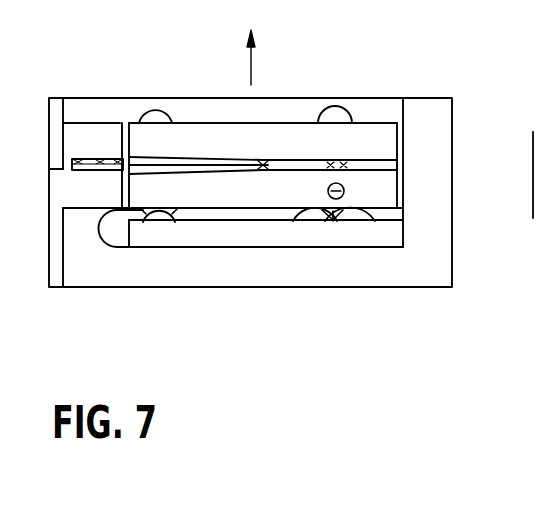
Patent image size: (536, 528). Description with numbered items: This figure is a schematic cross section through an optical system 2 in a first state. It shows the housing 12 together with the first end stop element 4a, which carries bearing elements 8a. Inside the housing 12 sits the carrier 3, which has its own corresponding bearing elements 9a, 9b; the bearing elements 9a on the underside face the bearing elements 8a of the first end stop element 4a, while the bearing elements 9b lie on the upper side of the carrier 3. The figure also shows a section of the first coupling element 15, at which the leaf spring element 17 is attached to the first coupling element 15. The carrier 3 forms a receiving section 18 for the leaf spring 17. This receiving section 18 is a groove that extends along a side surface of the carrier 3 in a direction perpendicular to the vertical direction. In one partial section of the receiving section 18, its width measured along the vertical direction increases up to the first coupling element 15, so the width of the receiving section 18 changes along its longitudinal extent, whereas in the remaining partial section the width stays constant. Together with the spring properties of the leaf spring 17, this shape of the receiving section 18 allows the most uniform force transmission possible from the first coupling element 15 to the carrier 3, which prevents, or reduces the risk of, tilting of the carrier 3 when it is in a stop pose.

The optical system 2 is at (108, 315).
The carrier 3 is at (363, 147).
The first end stop element 4a is at (360, 240).
The bearing elements 8a is at (158, 222).
The bearing elements 9a is at (177, 213).
The bearing elements 9b is at (160, 117).
The housing 12 is at (428, 275).
The first coupling element 15 is at (95, 138).
The leaf spring element 17 is at (119, 125).
The receiving section 18 is at (287, 152).